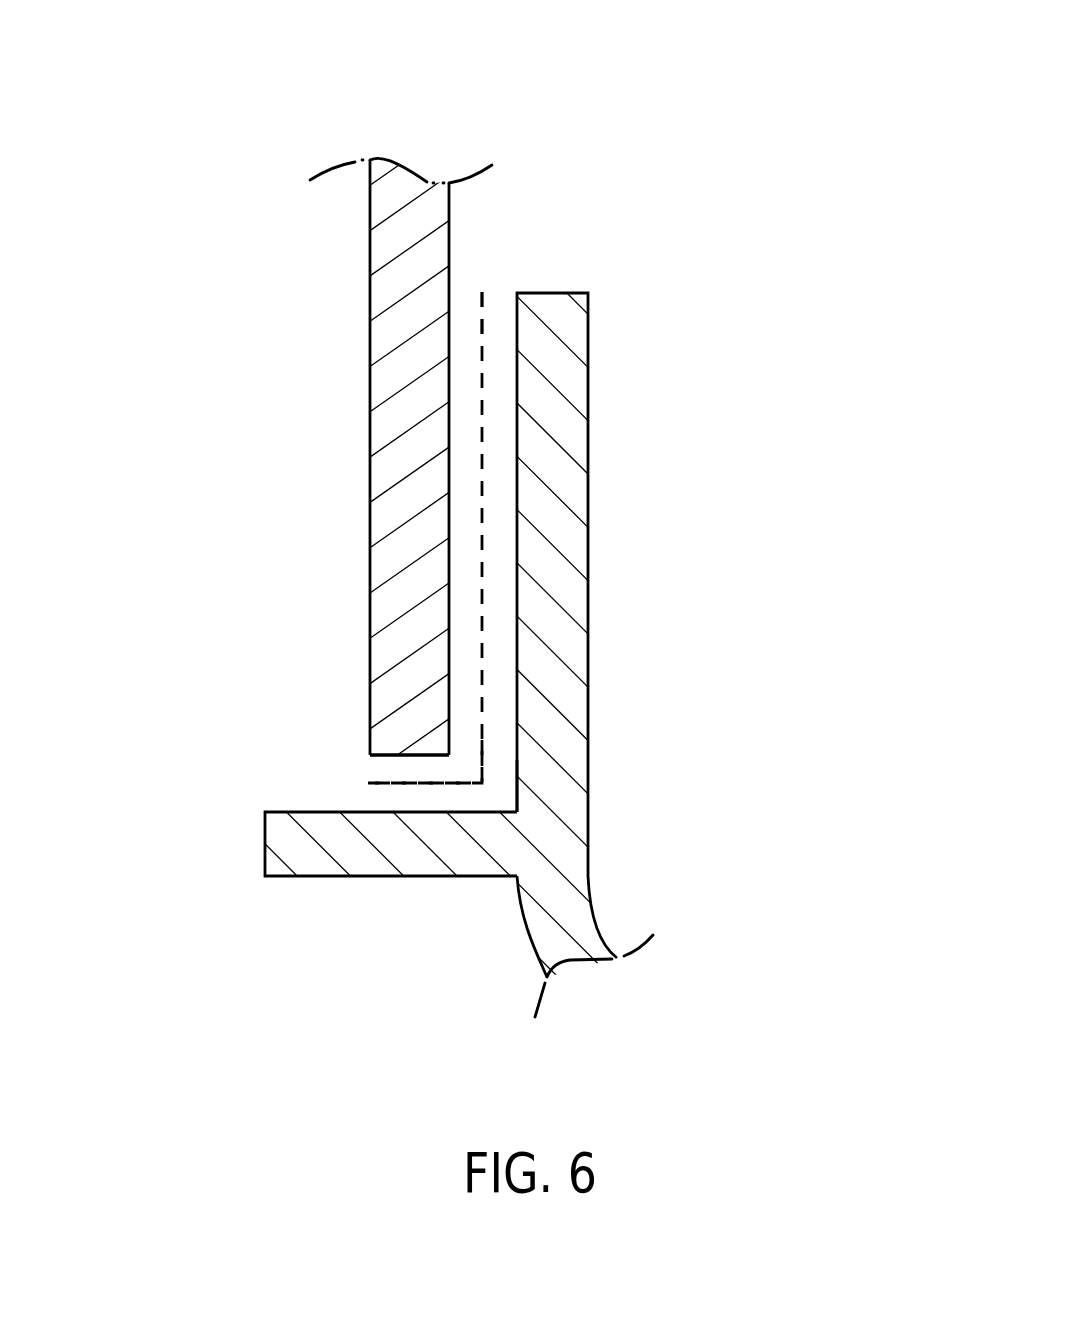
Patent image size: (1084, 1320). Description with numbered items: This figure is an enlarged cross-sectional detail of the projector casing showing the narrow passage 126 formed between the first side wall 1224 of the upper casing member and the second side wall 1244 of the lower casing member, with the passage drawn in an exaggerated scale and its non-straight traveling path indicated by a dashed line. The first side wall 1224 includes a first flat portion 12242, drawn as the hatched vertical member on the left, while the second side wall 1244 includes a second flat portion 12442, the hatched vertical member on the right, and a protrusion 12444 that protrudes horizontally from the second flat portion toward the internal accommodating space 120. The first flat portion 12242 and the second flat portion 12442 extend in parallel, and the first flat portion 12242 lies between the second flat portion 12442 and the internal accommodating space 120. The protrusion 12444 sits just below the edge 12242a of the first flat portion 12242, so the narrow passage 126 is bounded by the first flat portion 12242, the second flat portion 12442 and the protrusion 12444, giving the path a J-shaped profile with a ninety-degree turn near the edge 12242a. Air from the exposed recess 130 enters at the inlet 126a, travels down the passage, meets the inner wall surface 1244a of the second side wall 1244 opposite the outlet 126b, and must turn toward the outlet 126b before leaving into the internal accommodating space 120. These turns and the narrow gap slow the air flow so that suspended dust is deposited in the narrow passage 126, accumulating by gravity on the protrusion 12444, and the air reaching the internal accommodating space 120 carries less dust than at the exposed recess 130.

The narrow passage 126 is at (632, 108).
The inlet 126a is at (500, 283).
The outlet 126b is at (365, 780).
The internal accommodating space 120 is at (260, 533).
The exposed recess 130 is at (720, 352).
The first side wall 1224 is at (400, 455).
The first flat portion 12242 is at (332, 430).
The edge 12242a is at (410, 758).
The second side wall 1244 is at (542, 648).
The second flat portion 12442 is at (570, 515).
The protrusion 12444 is at (498, 888).
The inner wall surface 1244a is at (515, 787).